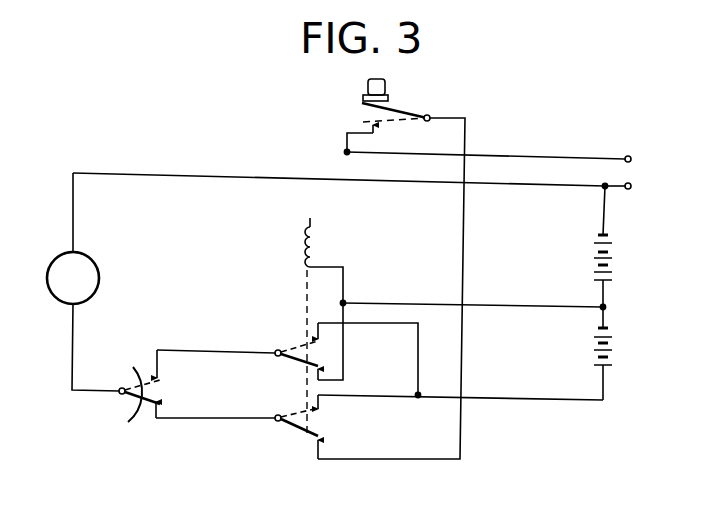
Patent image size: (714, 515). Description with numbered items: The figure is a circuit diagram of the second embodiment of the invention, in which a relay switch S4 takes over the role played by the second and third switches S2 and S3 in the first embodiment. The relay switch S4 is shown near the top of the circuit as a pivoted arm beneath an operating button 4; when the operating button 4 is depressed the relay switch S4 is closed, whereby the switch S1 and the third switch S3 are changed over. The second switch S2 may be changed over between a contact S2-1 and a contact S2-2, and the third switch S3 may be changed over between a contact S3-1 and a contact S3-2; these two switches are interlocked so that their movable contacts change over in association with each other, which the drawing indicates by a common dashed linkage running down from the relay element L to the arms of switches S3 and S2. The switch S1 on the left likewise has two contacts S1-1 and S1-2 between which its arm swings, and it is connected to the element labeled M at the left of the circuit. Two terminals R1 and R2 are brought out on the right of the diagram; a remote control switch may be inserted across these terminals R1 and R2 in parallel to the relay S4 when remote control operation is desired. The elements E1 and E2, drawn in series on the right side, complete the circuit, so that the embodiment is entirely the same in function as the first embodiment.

The operating button 4 is at (387, 90).
The relay switch S4 is at (371, 121).
The terminal R1 is at (508, 159).
The terminal R2 is at (637, 185).
The battery E1 is at (620, 246).
The battery E2 is at (620, 353).
The relay coil L is at (303, 247).
The motor M is at (73, 278).
The switch S1 is at (139, 413).
The switch S1 contact 1 S1-1 is at (165, 378).
The switch S1 contact 2 S1-2 is at (162, 403).
The third switch S3 is at (301, 360).
The contact S3-2 is at (323, 338).
The contact S3-1 is at (323, 366).
The second switch S2 is at (300, 430).
The contact S2-2 is at (323, 408).
The contact S2-1 is at (323, 434).